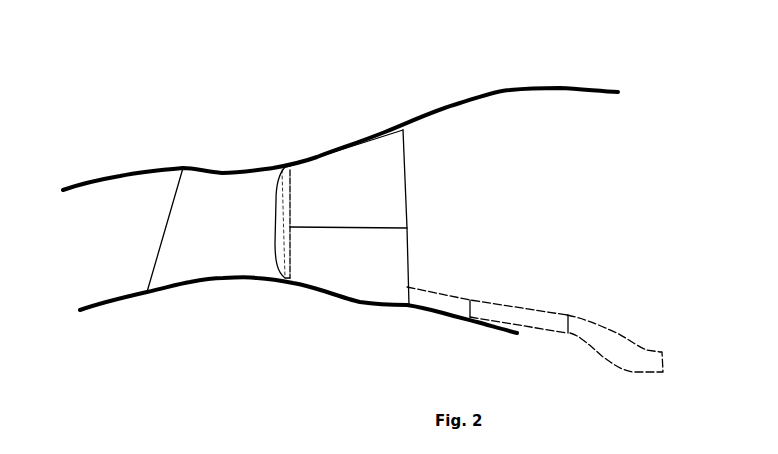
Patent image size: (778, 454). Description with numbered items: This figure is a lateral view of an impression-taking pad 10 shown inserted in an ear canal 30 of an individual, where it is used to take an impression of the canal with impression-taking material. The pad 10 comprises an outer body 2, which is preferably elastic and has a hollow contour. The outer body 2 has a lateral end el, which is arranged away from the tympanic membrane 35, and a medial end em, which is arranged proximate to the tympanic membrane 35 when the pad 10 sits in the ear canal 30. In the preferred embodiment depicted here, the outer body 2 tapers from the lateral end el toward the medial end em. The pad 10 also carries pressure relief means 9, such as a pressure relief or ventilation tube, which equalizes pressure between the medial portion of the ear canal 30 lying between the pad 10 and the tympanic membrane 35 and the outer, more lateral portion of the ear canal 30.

The impression-taking pad 10 is at (245, 78).
The ear canal 30 is at (117, 212).
The tympanic membrane 35 is at (162, 250).
The outer body 2 is at (316, 183).
The pressure relief means 9 is at (508, 302).
The lateral end el is at (419, 152).
The medial end em is at (254, 230).